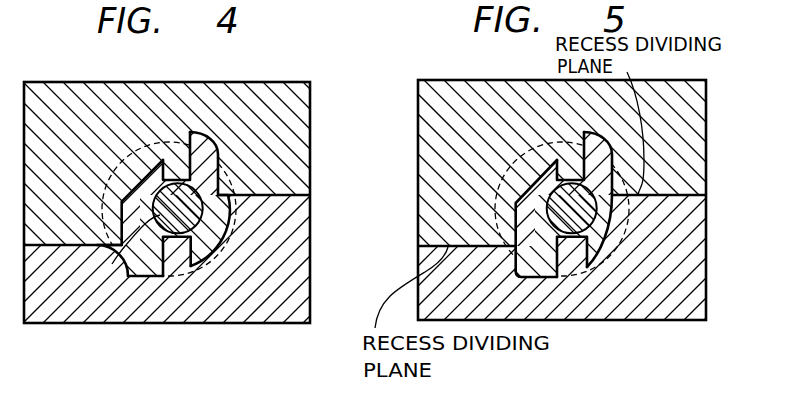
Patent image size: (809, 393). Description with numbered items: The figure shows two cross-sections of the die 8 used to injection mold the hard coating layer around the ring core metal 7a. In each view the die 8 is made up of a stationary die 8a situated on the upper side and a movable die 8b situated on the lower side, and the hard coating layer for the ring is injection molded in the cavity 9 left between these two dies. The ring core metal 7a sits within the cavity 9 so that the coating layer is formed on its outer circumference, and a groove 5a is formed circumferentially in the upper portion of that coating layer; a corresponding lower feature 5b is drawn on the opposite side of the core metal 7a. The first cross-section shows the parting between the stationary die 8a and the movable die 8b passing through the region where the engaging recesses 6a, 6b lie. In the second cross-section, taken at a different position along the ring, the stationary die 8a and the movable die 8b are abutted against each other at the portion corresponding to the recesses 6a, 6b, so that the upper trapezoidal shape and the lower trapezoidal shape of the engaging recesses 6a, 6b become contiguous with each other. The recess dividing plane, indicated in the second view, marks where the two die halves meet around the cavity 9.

In FIG. 4, the groove 5a is at (171, 161).
In FIG. 5, the groove 5a is at (575, 157).
In FIG. 4, the lower slot-forming projection 5b is at (175, 262).
In FIG. 5, the lower slot-forming projection 5b is at (572, 266).
In FIG. 4, the engaging recess 6a is at (229, 169).
In FIG. 4, the engaging recess 6b is at (113, 223).
In FIG. 4, the ring core metal 7a is at (100, 270).
In FIG. 5, the ring core metal 7a is at (558, 222).
In FIG. 4, the die 8 is at (352, 163).
In FIG. 5, the die 8 is at (750, 160).
In FIG. 4, the stationary die 8a is at (305, 168).
In FIG. 5, the stationary die 8a is at (707, 172).
In FIG. 4, the movable die 8b is at (305, 238).
In FIG. 5, the movable die 8b is at (707, 228).
In FIG. 4, the cavity 9 is at (138, 273).
In FIG. 5, the cavity 9 is at (539, 271).